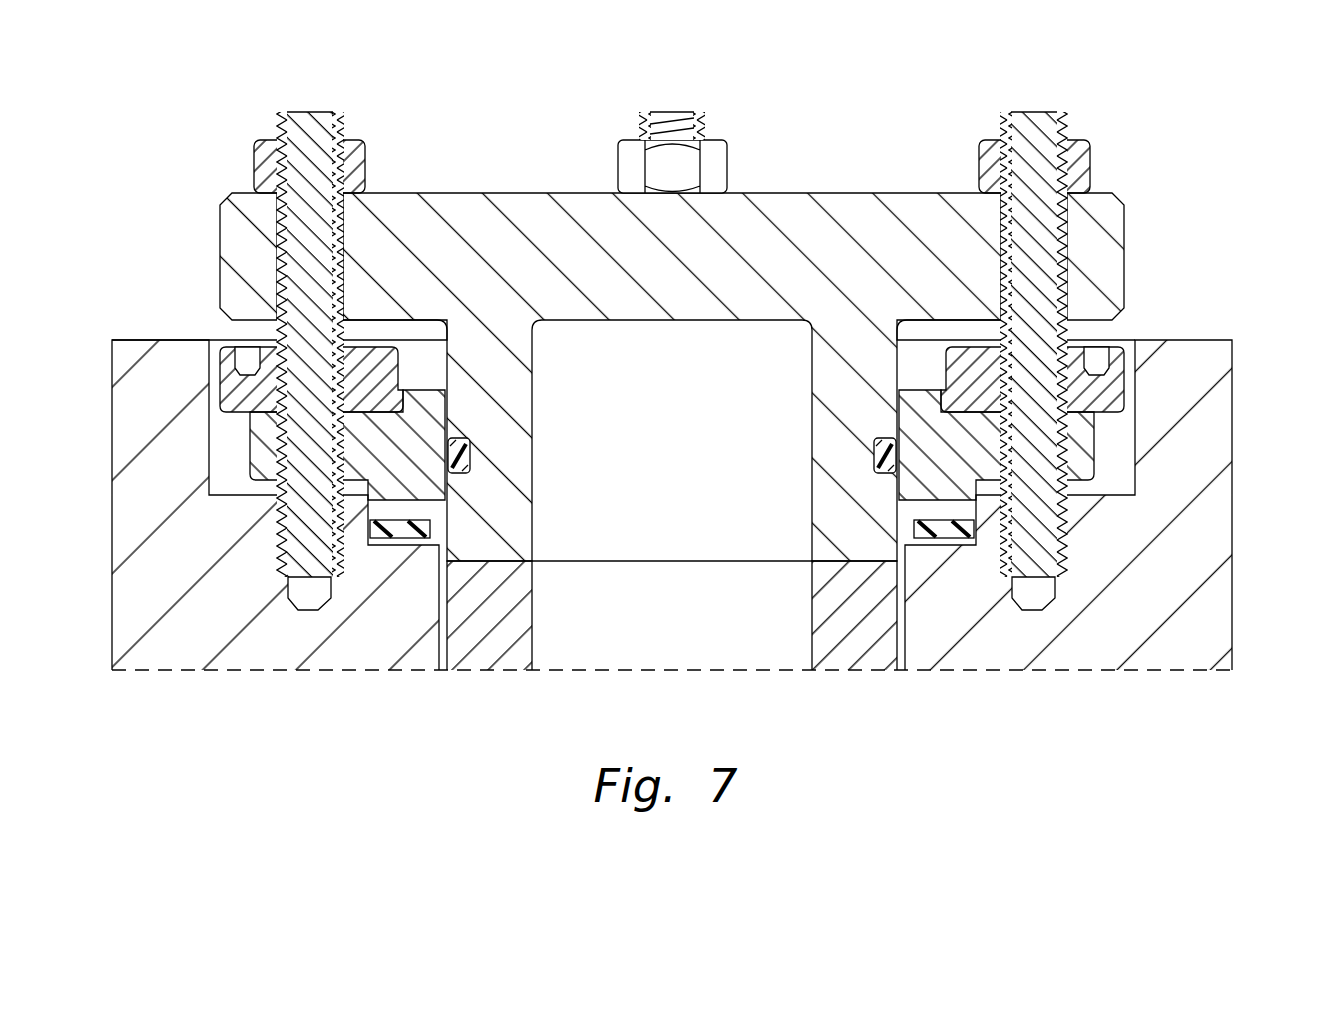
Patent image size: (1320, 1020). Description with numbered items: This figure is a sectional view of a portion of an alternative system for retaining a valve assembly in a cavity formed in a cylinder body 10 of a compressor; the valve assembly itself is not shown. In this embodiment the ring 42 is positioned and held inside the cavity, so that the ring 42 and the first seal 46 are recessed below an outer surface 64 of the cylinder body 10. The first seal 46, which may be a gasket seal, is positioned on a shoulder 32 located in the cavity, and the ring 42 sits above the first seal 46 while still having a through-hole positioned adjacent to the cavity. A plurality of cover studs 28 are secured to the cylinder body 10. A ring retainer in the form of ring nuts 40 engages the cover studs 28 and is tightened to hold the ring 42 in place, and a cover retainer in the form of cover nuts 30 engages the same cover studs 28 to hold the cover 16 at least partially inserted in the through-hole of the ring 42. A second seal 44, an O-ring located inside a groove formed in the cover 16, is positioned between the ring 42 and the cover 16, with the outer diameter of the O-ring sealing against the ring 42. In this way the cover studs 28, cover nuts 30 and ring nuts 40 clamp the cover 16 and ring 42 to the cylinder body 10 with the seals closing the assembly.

The cylinder body 10 is at (1232, 540).
The cover 16 is at (1124, 262).
The cover studs 28 is at (308, 112).
The cover nuts 30 is at (254, 153).
The shoulder 32 is at (435, 520).
The ring nuts 40 is at (1125, 389).
The ring 42 is at (1095, 453).
The second seal 44 is at (470, 456).
The first seal 46 is at (916, 528).
The outer surface 64 is at (135, 340).